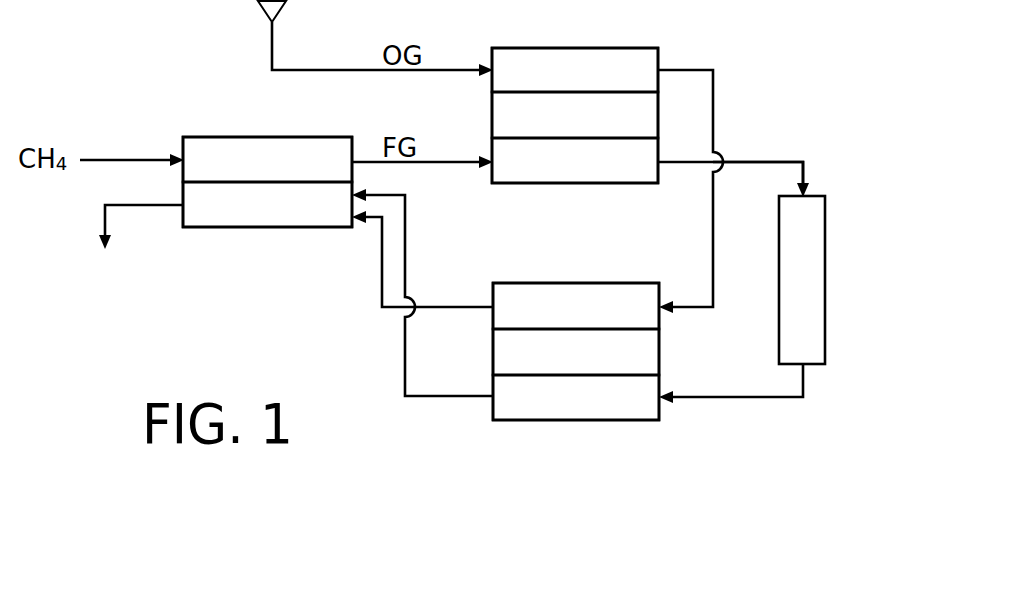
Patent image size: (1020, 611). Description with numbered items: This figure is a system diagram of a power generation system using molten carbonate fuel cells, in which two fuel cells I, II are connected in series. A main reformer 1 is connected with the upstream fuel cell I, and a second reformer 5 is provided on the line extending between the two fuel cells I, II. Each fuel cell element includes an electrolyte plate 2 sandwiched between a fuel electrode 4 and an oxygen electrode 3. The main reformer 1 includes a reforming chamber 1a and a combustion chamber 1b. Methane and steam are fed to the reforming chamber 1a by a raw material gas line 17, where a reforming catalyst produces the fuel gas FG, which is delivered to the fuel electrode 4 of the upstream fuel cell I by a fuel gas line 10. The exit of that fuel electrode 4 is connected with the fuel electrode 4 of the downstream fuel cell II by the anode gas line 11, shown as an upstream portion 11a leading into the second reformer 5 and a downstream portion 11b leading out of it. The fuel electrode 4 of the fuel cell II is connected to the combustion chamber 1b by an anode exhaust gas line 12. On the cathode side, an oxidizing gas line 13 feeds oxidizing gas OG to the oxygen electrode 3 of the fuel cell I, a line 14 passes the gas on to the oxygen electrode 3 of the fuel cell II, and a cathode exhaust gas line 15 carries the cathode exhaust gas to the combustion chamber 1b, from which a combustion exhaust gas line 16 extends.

The main reformer 1 is at (170, 130).
The reforming chamber 1a is at (276, 141).
The combustion chamber 1b is at (235, 220).
The electrolyte plate 2 is at (510, 114).
The oxygen electrode 3 is at (548, 58).
The fuel electrode 4 is at (584, 172).
The second reformer 5 is at (812, 298).
The fuel gas line 10 is at (450, 164).
The anode gas line 11 is at (765, 152).
The anode gas line 11a is at (793, 162).
The anode gas line 11b is at (762, 400).
The anode exhaust gas line 12 is at (422, 400).
The oxidizing gas line 13 is at (347, 68).
The line 14 is at (713, 82).
The cathode exhaust gas line 15 is at (380, 272).
The combustion exhaust gas line 16 is at (152, 207).
The raw material gas line 17 is at (113, 158).
The fuel cell I is at (672, 50).
The fuel cell II is at (672, 428).